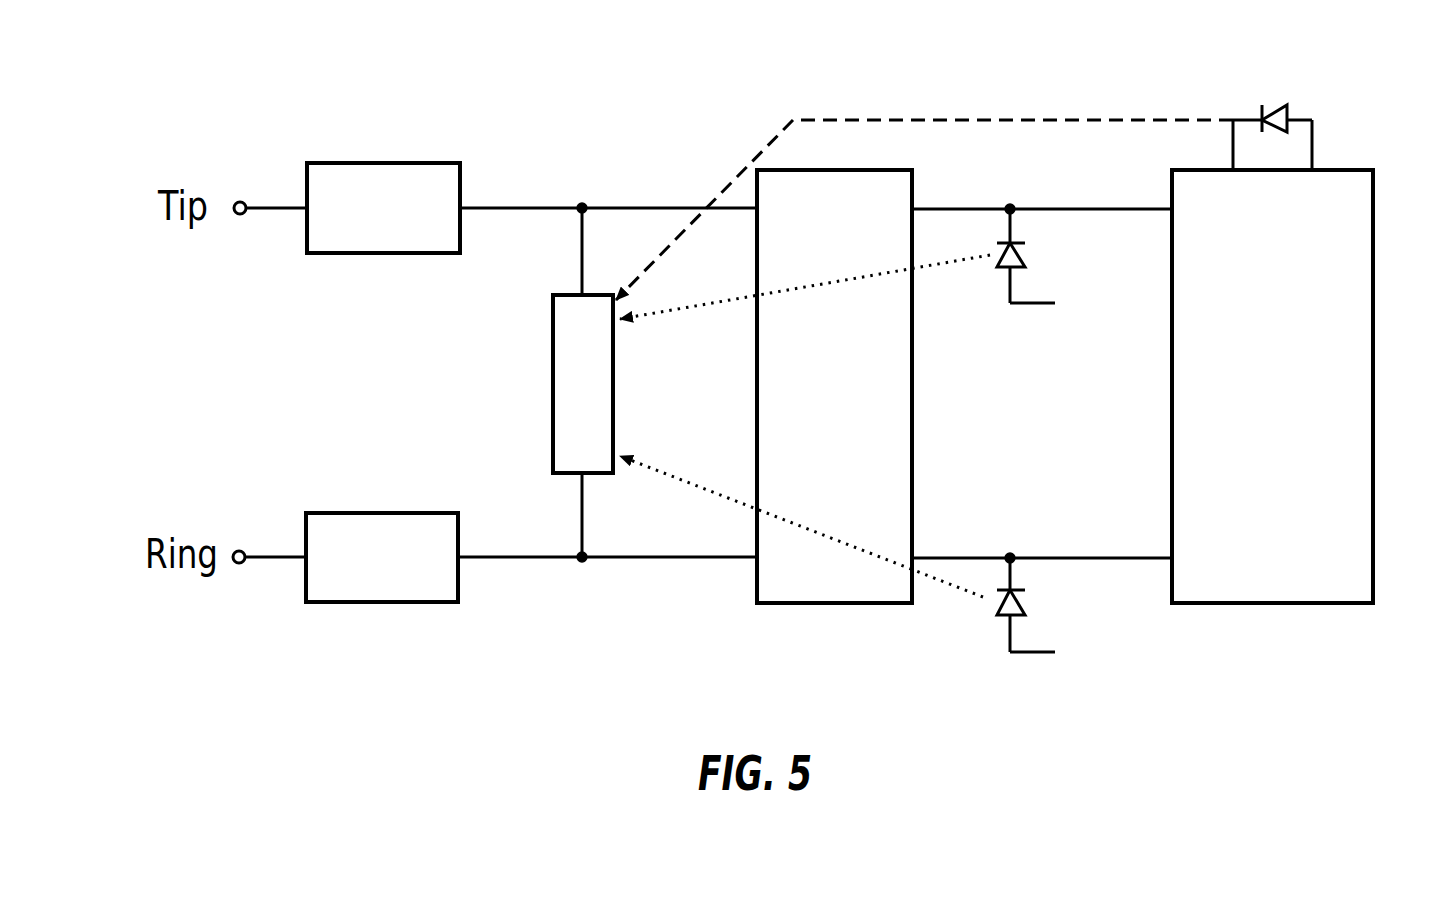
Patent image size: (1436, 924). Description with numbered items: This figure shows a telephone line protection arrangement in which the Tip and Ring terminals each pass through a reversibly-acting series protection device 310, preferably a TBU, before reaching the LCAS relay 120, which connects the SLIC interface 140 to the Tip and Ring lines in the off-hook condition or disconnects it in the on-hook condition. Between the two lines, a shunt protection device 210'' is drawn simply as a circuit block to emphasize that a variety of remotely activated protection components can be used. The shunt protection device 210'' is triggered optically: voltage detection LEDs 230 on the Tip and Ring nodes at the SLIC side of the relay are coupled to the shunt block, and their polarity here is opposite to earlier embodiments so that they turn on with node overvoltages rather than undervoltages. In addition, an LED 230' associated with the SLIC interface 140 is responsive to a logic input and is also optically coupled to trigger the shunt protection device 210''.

The series protection device 310 is at (380, 140).
The shunt protection device 210'' is at (545, 339).
The LCAS relay 120 is at (808, 472).
The SLIC interface 140 is at (1248, 428).
The LED responsive to a logic input 230' is at (1306, 93).
The voltage detection LED 230 is at (1081, 441).